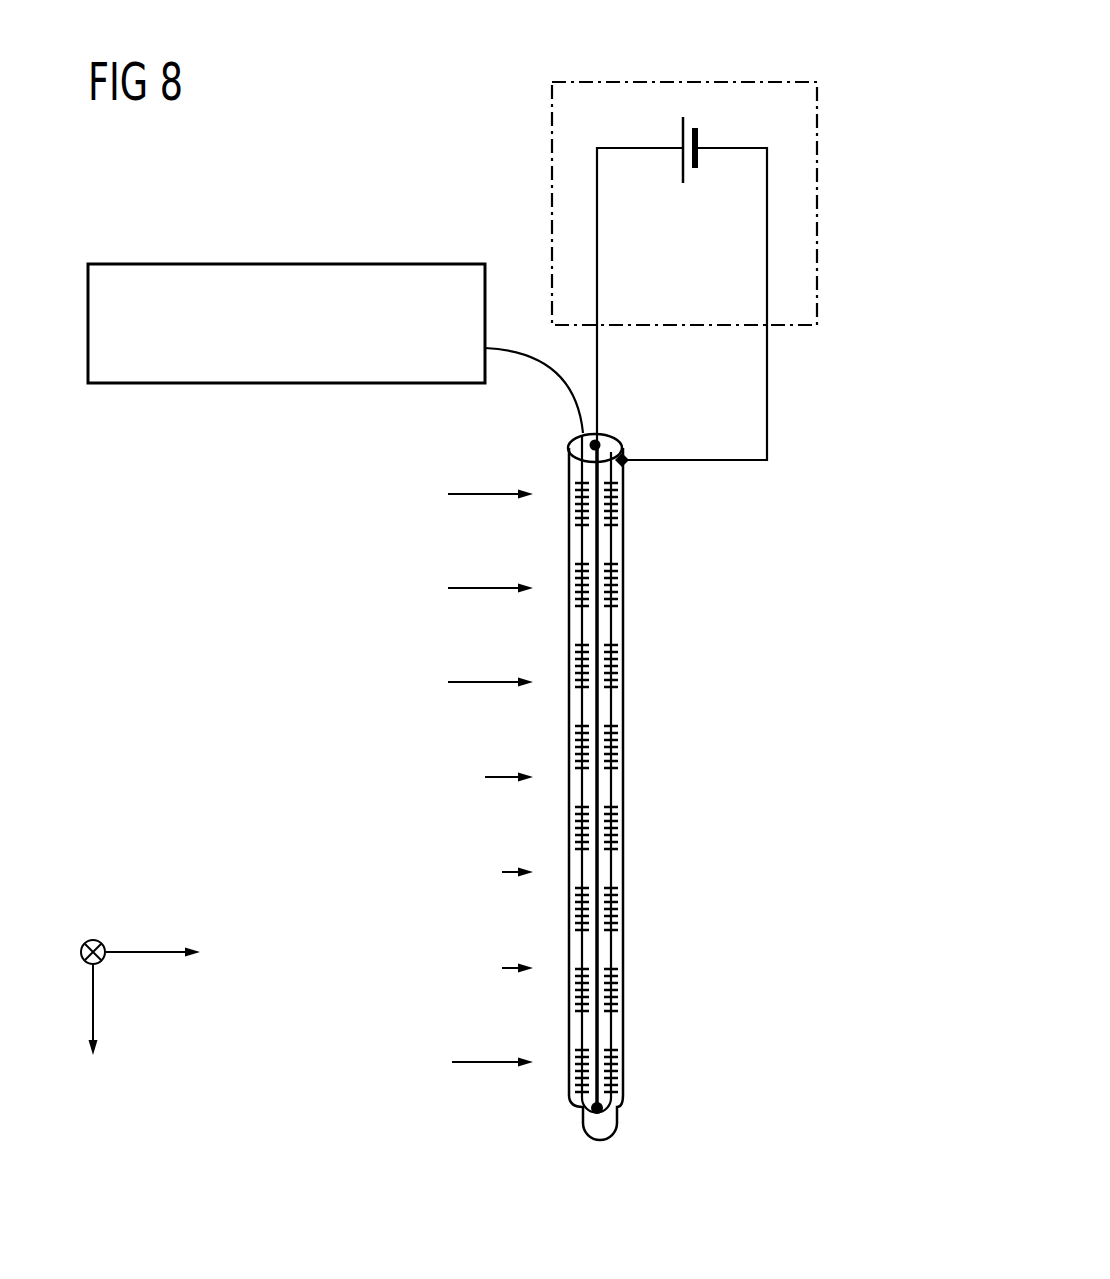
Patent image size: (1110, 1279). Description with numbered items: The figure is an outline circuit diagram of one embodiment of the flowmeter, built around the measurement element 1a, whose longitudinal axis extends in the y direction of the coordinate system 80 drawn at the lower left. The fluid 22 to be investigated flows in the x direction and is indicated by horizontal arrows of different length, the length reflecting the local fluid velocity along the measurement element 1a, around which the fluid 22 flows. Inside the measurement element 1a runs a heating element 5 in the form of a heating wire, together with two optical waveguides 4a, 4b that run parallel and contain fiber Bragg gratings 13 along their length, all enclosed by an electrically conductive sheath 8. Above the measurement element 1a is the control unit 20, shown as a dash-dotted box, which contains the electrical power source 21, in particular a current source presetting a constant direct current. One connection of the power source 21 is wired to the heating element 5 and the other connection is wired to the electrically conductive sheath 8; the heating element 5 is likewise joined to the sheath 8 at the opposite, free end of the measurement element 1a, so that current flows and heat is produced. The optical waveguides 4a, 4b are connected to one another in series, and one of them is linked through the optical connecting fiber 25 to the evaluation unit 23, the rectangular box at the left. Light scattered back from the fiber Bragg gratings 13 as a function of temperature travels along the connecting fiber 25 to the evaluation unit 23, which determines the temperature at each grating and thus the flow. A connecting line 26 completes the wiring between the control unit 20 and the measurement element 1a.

The measurement element 1a is at (646, 523).
The optical waveguide 4a is at (582, 708).
The optical waveguide 4b is at (612, 710).
The heating element 5 is at (596, 1030).
The electrically conductive sheath 8 is at (624, 617).
The fiber Bragg gratings 13 is at (624, 830).
The control unit 20 is at (818, 185).
The electrical power source 21 is at (693, 101).
The fluid 22 is at (503, 872).
The evaluation unit 23 is at (290, 383).
The optical connecting fiber 25 is at (548, 372).
The supply line 26 is at (680, 460).
The coordinate system 80 is at (126, 994).